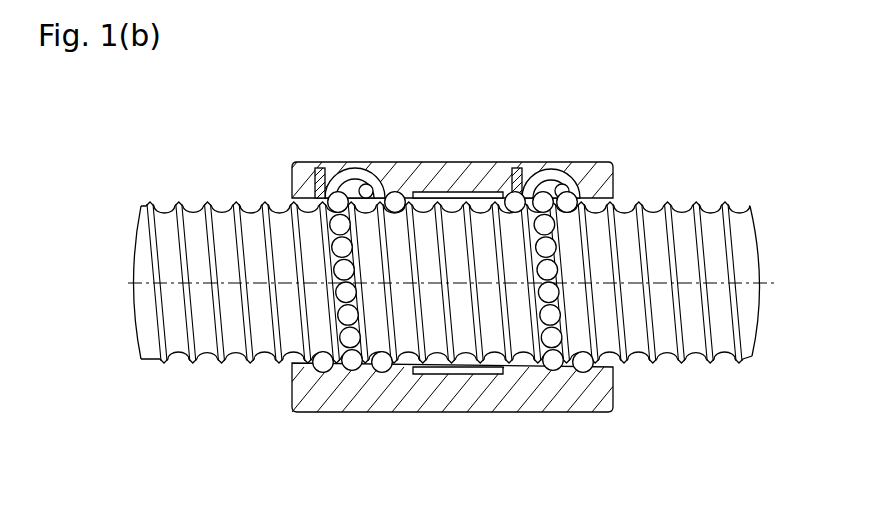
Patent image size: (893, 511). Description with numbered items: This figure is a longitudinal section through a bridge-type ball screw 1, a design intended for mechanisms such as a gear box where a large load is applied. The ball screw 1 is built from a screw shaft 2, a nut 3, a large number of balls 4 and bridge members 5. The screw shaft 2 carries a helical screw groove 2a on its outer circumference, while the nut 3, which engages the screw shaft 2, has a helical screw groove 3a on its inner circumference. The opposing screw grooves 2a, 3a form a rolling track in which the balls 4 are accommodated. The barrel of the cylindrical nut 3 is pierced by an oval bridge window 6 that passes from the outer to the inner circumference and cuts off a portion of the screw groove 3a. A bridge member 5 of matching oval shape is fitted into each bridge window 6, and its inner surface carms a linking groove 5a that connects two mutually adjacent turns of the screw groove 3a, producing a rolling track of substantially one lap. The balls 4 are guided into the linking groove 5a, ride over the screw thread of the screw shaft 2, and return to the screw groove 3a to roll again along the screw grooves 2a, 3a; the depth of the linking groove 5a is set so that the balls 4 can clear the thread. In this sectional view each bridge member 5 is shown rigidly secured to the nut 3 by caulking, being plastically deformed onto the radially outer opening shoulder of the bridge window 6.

The ball screw 1 is at (471, 113).
The screw shaft 2 is at (690, 203).
The screw groove 2a is at (698, 330).
The nut 3 is at (432, 162).
The screw groove 3a is at (386, 372).
The balls 4 is at (553, 372).
The bridge member 5 is at (330, 162).
The linking groove 5a is at (350, 162).
The bridge window 6 is at (371, 162).